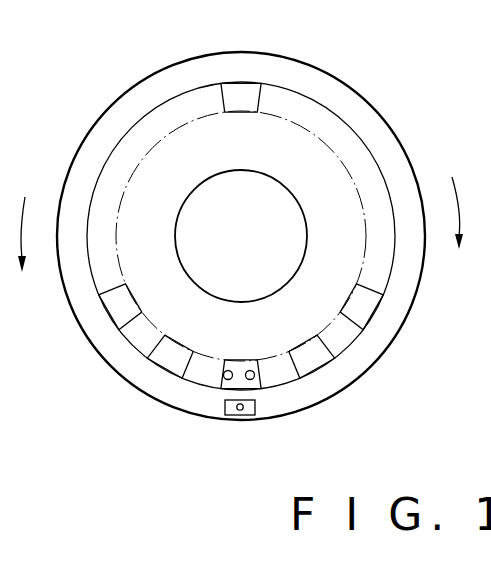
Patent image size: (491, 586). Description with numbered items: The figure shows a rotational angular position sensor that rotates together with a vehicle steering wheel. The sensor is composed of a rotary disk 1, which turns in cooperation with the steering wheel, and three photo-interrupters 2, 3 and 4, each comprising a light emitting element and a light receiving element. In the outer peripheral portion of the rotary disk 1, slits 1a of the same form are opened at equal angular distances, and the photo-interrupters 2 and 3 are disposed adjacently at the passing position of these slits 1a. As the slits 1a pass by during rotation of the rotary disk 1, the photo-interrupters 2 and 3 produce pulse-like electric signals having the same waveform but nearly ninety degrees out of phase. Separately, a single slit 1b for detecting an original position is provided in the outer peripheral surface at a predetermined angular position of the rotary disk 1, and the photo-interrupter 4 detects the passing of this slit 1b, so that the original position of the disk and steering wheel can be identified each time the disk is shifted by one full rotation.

The rotary disk 1 is at (372, 128).
The slits 1a is at (243, 92).
The slit for detecting an original position 1b is at (245, 413).
The photo-interrupter 2 is at (227, 369).
The photo-interrupter 3 is at (251, 369).
The photo-interrupter 4 is at (238, 412).